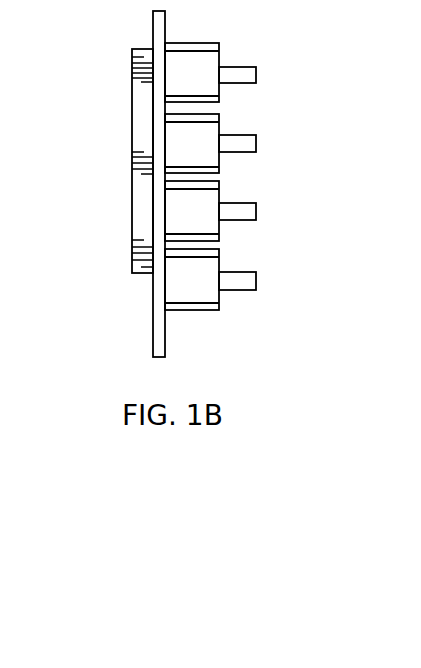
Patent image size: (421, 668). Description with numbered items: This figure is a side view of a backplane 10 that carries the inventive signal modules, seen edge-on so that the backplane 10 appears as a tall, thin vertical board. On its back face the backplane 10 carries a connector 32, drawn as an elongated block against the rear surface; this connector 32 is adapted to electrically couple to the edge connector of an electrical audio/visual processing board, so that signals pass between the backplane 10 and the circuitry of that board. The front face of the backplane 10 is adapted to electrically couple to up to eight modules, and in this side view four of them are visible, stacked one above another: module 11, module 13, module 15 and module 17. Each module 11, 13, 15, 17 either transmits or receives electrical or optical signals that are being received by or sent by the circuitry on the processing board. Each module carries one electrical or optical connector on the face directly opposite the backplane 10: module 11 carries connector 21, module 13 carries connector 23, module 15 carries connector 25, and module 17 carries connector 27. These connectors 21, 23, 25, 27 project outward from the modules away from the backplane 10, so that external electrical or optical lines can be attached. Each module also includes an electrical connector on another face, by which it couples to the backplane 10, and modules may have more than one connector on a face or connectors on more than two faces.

The backplane 10 is at (165, 340).
The module 11 is at (190, 62).
The module 13 is at (193, 132).
The module 15 is at (193, 200).
The module 17 is at (193, 270).
The electrical or optical connector 21 is at (257, 70).
The electrical or optical connector 23 is at (257, 140).
The electrical or optical connector 25 is at (257, 208).
The electrical or optical connector 27 is at (257, 278).
The connector 32 is at (132, 218).